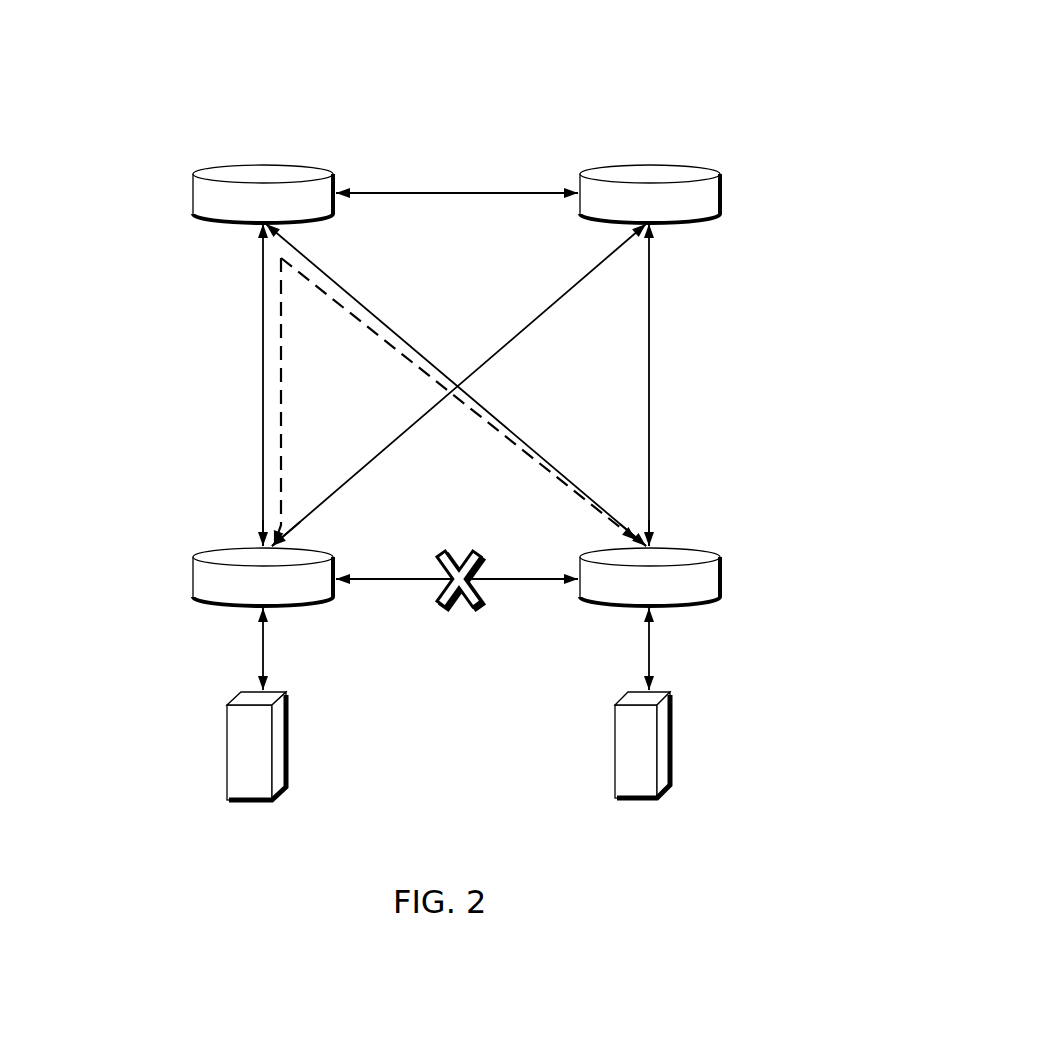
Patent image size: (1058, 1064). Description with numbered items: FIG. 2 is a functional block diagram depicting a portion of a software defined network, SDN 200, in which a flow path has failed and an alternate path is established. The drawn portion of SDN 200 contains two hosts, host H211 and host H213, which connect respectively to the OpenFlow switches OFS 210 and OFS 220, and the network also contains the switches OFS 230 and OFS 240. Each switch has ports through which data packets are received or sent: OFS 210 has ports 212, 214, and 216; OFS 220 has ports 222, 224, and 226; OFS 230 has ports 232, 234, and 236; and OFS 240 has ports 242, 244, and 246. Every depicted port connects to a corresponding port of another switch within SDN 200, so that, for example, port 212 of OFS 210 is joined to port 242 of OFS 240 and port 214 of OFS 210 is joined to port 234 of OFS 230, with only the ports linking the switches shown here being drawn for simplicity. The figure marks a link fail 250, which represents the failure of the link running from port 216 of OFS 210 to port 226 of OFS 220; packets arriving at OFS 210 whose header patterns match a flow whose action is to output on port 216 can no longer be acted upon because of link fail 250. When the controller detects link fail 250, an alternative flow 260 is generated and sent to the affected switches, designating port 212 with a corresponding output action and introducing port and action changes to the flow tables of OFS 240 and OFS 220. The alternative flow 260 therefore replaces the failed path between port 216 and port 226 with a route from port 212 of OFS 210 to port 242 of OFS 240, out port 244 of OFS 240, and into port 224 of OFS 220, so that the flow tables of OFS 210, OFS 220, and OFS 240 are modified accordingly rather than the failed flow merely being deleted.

The SDN 200 is at (694, 80).
The OFS 210 is at (193, 577).
The OFS 220 is at (722, 577).
The OFS 230 is at (722, 192).
The OFS 240 is at (193, 192).
The port 212 is at (262, 512).
The port 214 is at (317, 503).
The port 216 is at (385, 577).
The port 222 is at (652, 514).
The port 224 is at (600, 507).
The port 226 is at (540, 577).
The port 232 is at (652, 257).
The port 234 is at (600, 264).
The port 236 is at (540, 191).
The port 242 is at (262, 258).
The port 244 is at (337, 285).
The port 246 is at (385, 191).
The link fail 250 is at (450, 601).
The alternative flow 260 is at (378, 336).
The host H211 is at (248, 805).
The host H213 is at (635, 803).